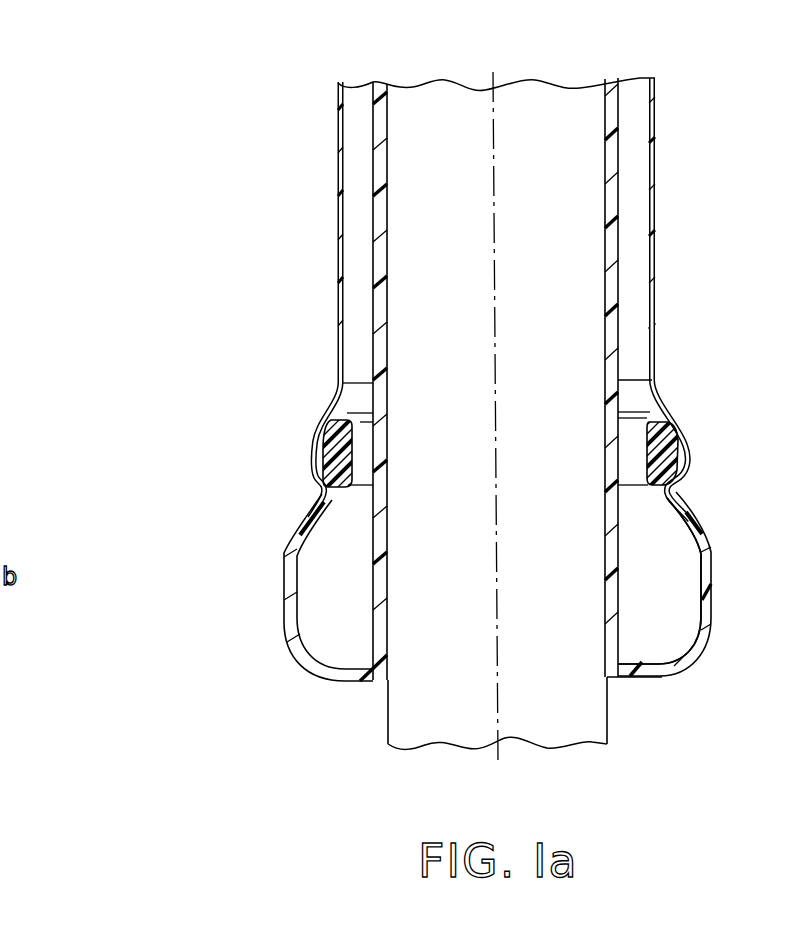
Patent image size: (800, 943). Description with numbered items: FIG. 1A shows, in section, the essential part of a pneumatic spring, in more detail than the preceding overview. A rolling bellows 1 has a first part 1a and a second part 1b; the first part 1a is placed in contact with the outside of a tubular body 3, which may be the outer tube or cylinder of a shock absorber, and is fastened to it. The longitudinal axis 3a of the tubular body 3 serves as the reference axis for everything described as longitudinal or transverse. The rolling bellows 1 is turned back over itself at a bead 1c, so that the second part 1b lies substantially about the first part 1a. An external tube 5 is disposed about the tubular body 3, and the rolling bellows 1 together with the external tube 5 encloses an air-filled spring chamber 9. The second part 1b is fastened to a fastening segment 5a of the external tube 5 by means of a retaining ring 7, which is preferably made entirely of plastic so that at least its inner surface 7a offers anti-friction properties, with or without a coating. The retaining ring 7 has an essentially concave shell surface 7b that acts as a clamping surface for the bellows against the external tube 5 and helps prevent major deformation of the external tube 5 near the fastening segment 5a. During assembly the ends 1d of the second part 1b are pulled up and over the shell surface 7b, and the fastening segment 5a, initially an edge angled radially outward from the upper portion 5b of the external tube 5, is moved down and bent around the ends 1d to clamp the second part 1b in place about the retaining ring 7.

The rolling bellows 1 is at (316, 726).
The first part of the rolling bellows 1a is at (360, 590).
The second part of the rolling bellows 1b is at (713, 583).
The bead 1c is at (653, 662).
The ends of the second part 1d is at (662, 408).
The tubular body 3 is at (607, 697).
The longitudinal axis 3a is at (497, 680).
The external tube 5 is at (664, 231).
The fastening segment 5a is at (684, 406).
The upper portion of the external tube 5b is at (655, 312).
The retaining ring 7 is at (688, 446).
The inner surface of the retaining ring 7a is at (355, 444).
The shell surface 7b is at (318, 478).
The spring chamber 9 is at (663, 545).